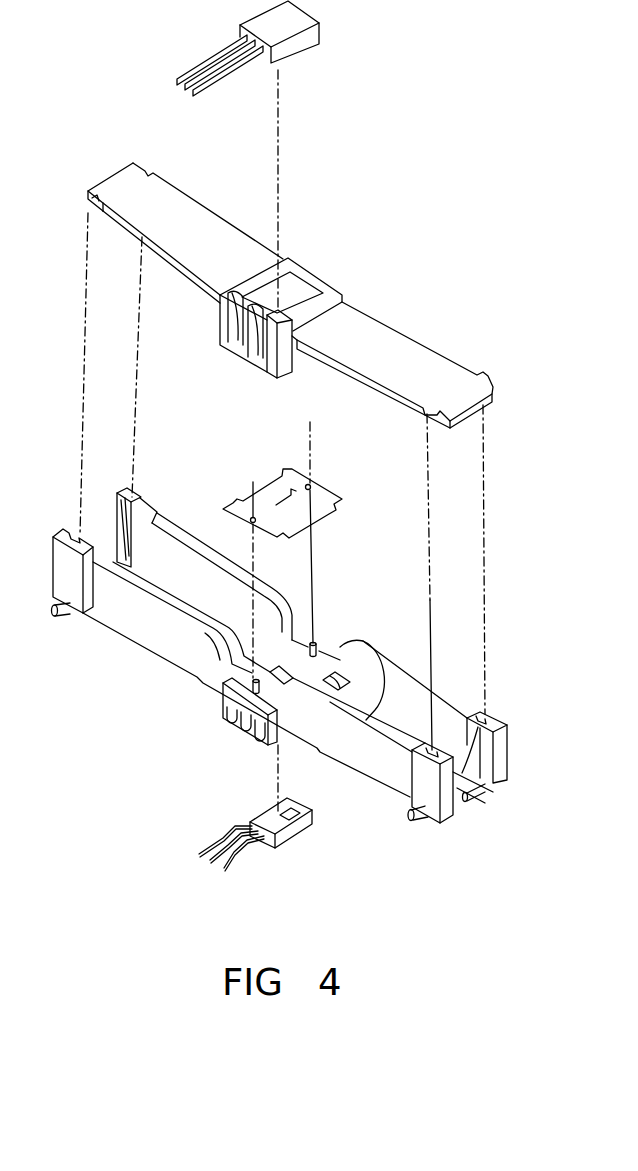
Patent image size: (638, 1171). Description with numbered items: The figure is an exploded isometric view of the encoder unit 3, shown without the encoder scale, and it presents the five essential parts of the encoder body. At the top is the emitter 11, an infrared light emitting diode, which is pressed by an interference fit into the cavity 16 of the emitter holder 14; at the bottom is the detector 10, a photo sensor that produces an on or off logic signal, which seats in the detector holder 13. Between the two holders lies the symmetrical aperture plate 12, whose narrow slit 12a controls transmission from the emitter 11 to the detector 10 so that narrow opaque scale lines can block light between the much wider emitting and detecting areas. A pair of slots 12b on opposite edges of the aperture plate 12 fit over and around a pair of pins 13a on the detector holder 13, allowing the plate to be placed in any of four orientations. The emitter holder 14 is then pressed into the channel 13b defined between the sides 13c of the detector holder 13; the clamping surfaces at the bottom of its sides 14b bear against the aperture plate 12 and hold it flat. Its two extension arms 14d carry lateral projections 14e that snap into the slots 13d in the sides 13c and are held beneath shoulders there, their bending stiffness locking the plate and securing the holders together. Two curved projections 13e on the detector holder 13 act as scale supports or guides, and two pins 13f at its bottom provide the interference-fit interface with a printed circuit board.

The encoder unit 3 is at (277, 483).
The detector 10 is at (250, 822).
The emitter 11 is at (317, 41).
The aperture plate 12 is at (277, 495).
The narrow slit 12a is at (283, 500).
The slots 12b is at (309, 484).
The detector holder 13 is at (270, 639).
The pins 13a is at (169, 655).
The channel 13b is at (321, 657).
The sides 13c is at (403, 675).
The slots 13d is at (77, 537).
The curved projections 13e is at (252, 604).
The pins 13f is at (72, 616).
The emitter holder 14 is at (285, 279).
The sides 14b is at (250, 362).
The arms 14d is at (170, 198).
The lateral projections 14e is at (149, 171).
The cavity 16 is at (298, 292).